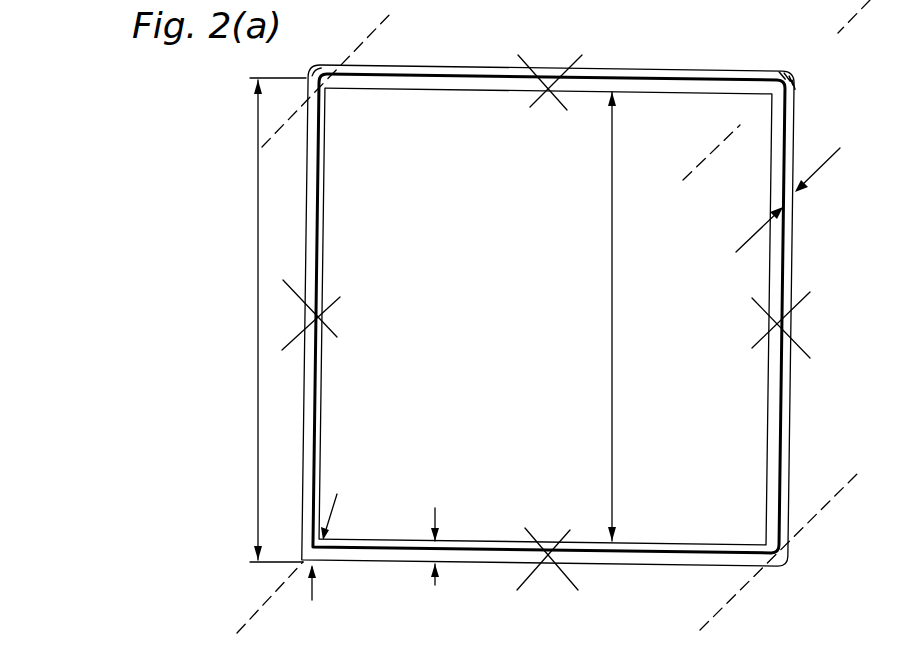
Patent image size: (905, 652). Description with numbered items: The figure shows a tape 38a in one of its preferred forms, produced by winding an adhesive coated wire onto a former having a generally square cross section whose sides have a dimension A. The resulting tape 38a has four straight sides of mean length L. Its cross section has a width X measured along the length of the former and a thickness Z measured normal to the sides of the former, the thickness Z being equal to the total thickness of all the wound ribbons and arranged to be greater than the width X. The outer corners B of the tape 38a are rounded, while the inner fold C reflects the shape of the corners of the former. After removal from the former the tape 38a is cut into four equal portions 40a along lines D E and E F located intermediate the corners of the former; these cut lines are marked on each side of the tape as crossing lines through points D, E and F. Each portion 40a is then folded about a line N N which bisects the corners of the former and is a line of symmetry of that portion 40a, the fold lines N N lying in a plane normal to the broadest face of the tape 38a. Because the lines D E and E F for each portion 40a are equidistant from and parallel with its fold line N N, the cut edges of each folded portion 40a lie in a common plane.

The tape 38a is at (577, 311).
The portion 40a is at (438, 71).
The mean length L is at (264, 320).
The side dimension A is at (622, 316).
The thickness Z is at (433, 532).
The fold line N is at (309, 72).
The width X is at (797, 189).
The corners B is at (307, 596).
The inner fold C is at (334, 506).
The cut line point D is at (547, 323).
The cut line point E is at (544, 323).
The cut line point F is at (542, 323).